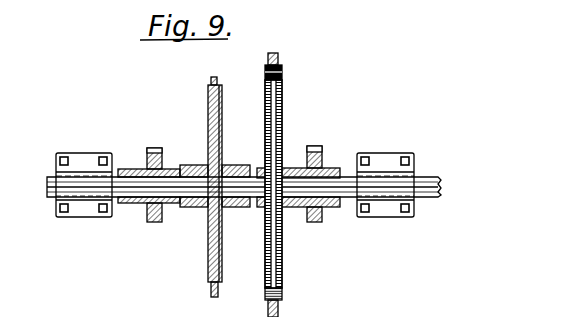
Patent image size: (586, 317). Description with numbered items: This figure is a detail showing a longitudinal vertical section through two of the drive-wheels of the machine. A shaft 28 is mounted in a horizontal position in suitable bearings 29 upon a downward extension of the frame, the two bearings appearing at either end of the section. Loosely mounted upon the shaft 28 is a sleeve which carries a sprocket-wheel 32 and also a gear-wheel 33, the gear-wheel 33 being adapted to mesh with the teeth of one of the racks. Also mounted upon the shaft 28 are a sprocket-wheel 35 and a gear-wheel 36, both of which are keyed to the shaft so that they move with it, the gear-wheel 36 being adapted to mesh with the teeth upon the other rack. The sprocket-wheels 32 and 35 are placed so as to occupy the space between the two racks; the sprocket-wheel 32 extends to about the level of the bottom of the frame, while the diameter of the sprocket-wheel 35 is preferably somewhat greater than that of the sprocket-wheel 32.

The shaft 28 is at (428, 183).
The bearings 29 is at (86, 207).
The sprocket-wheel 32 is at (210, 96).
The gear-wheel 33 is at (151, 147).
The sprocket-wheel 35 is at (281, 78).
The gear-wheel 36 is at (319, 149).